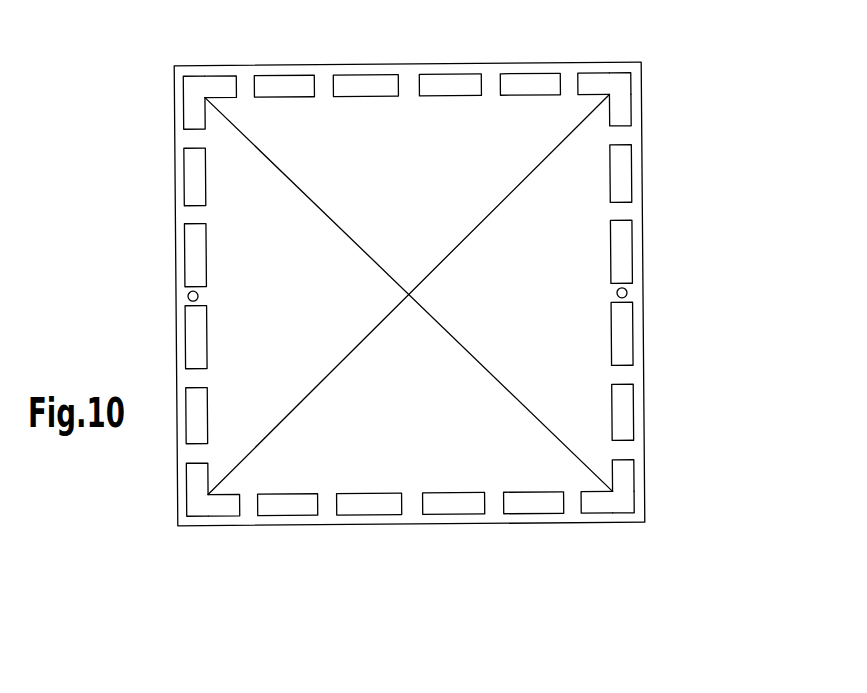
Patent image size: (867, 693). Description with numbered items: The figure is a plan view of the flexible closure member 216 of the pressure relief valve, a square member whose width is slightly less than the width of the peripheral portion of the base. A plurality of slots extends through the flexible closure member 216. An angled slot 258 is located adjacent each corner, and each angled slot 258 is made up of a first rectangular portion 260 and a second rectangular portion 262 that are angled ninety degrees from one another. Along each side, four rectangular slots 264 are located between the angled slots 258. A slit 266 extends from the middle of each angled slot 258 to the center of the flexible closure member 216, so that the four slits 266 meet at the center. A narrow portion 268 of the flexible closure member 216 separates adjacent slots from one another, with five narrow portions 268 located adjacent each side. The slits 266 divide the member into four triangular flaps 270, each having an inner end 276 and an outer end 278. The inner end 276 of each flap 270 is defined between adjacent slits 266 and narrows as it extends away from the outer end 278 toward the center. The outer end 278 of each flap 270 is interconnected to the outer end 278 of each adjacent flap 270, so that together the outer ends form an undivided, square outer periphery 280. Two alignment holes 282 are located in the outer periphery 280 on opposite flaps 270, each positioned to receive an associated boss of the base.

The flexible closure member 216 is at (248, 317).
The angled slot 258 is at (193, 85).
The first rectangular portion 260 is at (193, 110).
The second rectangular portion 262 is at (223, 85).
The rectangular slot 264 is at (198, 178).
The slit 266 is at (467, 233).
The narrow portion 268 is at (193, 133).
The flap 270 is at (433, 140).
The inner end 276 is at (367, 113).
The outer end 278 is at (268, 72).
The outer periphery 280 is at (198, 523).
The alignment hole 282 is at (188, 294).